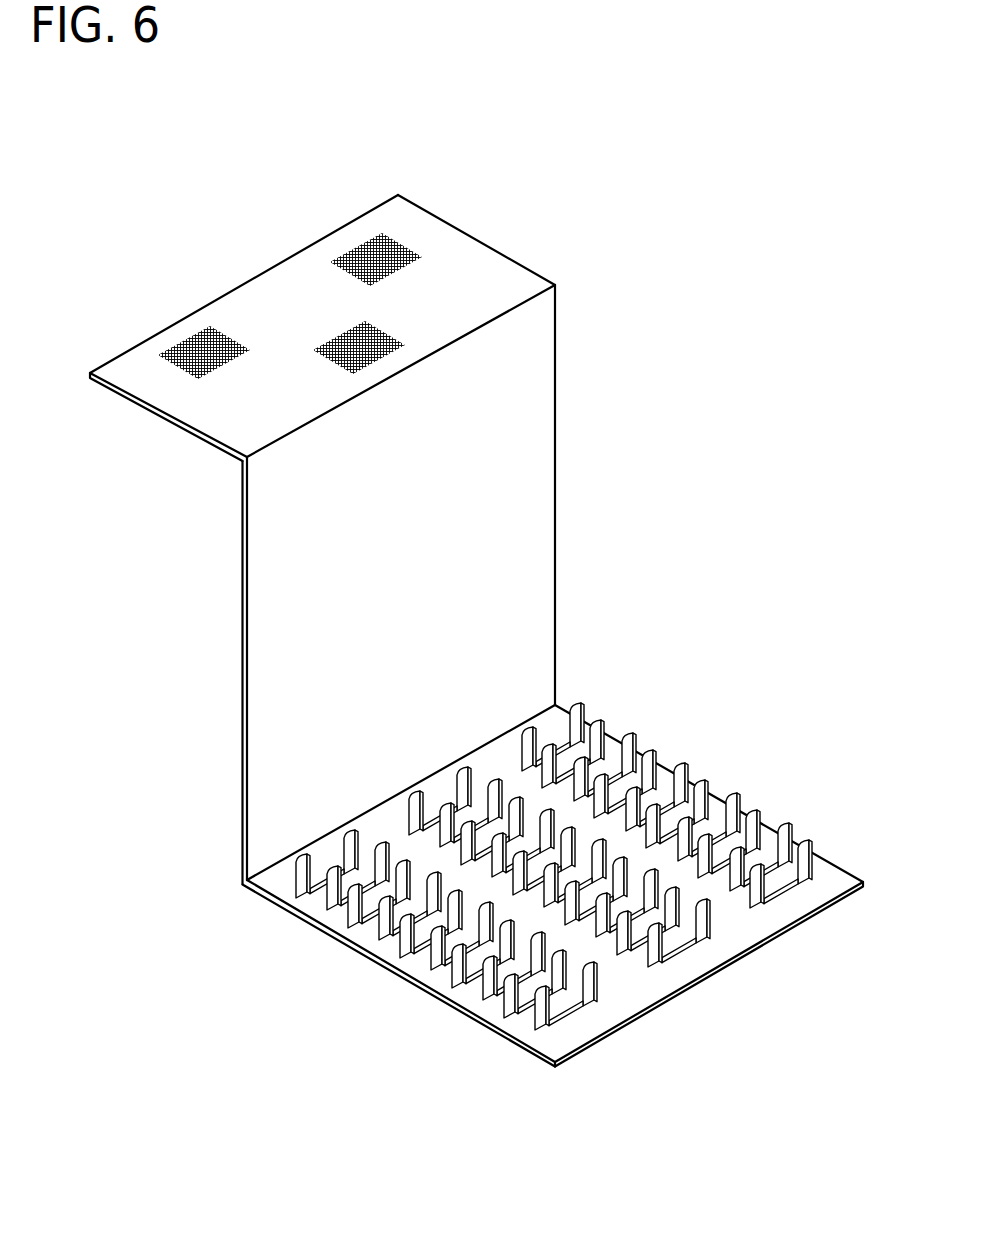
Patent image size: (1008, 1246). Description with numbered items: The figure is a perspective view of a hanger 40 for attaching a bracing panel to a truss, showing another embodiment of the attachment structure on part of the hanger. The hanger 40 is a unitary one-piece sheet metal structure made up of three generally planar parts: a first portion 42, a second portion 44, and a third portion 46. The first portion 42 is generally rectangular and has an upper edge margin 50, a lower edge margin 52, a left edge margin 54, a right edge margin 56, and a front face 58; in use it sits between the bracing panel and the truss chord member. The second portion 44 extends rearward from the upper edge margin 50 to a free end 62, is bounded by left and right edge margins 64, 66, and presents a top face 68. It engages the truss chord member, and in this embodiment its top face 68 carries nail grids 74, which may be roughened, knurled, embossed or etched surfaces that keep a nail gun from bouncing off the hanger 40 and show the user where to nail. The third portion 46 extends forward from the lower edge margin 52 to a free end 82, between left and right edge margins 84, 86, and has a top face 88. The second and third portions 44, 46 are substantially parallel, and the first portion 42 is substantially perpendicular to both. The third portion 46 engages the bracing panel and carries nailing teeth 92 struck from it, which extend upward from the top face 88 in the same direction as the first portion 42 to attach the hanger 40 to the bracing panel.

The hanger 40 is at (726, 267).
The first portion 42 is at (558, 425).
The second portion 44 is at (483, 238).
The third portion 46 is at (850, 868).
The upper edge margin 50 is at (526, 297).
The lower edge margin 52 is at (280, 865).
The left edge margin 54 is at (247, 652).
The right edge margin 56 is at (558, 490).
The front face 58 is at (405, 606).
The free end 62 is at (240, 284).
The left edge margin 64 is at (182, 426).
The right edge margin 66 is at (435, 216).
The top face 68 is at (311, 313).
The nail grid 74 is at (378, 243).
The free end 82 is at (677, 990).
The left edge margin 84 is at (393, 968).
The right edge margin 86 is at (662, 763).
The top face 88 is at (488, 1004).
The nailing teeth 92 is at (578, 705).